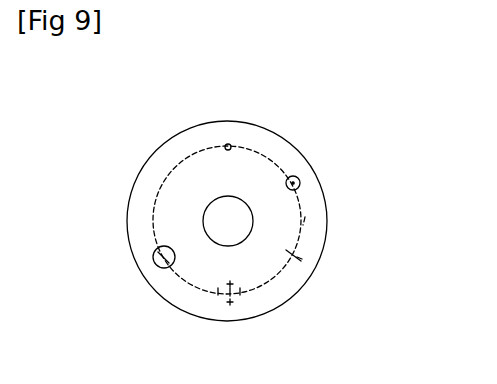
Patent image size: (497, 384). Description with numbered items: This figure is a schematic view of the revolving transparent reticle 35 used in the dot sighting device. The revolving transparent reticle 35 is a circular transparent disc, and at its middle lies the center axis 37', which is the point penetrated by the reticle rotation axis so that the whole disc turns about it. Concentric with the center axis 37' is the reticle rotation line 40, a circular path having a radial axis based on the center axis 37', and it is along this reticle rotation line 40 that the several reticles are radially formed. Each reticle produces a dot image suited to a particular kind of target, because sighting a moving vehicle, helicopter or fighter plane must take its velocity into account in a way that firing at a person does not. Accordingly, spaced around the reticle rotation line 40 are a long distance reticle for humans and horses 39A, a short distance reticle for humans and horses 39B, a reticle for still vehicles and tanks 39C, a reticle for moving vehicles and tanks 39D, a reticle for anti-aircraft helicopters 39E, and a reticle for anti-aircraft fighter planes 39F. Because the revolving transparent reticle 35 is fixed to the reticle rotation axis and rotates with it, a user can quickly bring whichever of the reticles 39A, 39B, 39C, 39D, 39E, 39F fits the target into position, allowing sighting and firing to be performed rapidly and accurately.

The revolving transparent reticle 35 is at (154, 116).
The long distance reticle for humans and horses 39A is at (162, 182).
The short distance reticle for humans and horses 39B is at (229, 144).
The reticle for still vehicles and tanks 39C is at (297, 177).
The reticle for moving vehicles and tanks 39D is at (300, 262).
The reticle for anti-aircraft helicopters 39E is at (232, 294).
The reticle for anti-aircraft fighter planes 39F is at (152, 264).
The reticle rotation line 40 is at (304, 217).
The center axis 37' is at (155, 221).